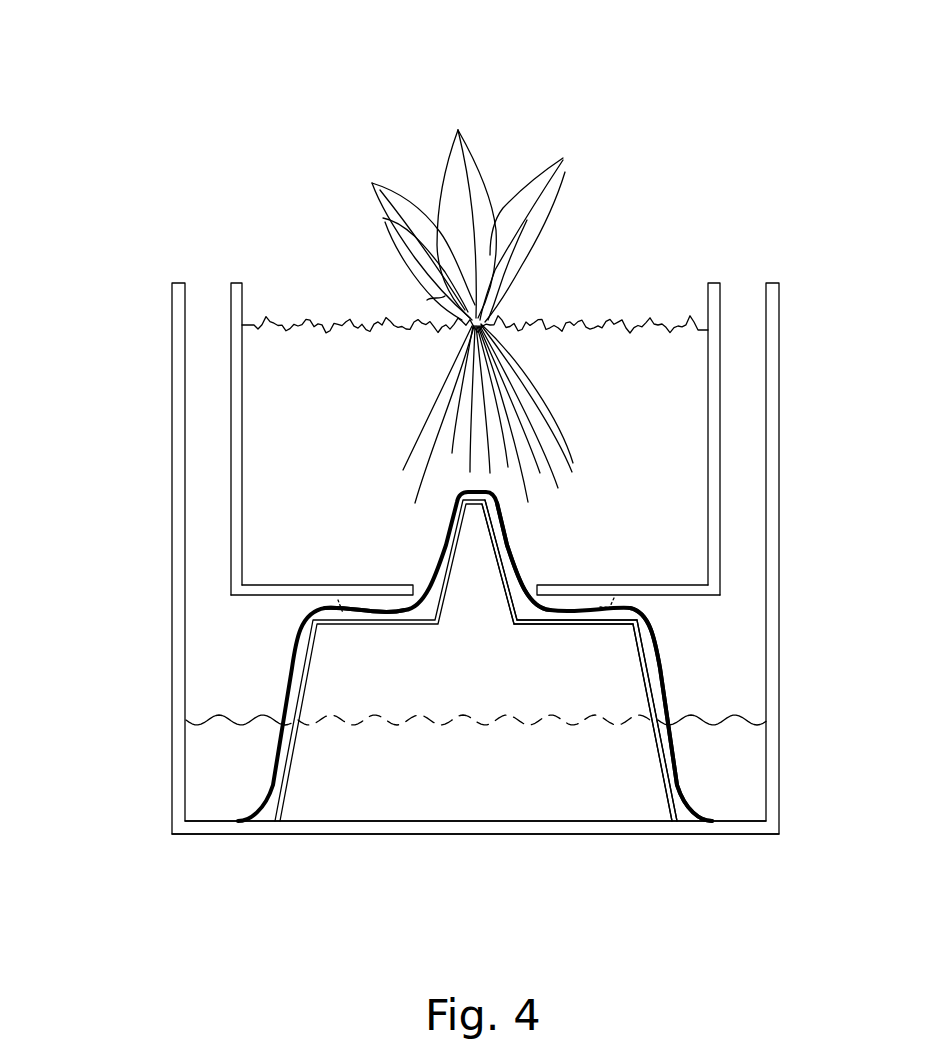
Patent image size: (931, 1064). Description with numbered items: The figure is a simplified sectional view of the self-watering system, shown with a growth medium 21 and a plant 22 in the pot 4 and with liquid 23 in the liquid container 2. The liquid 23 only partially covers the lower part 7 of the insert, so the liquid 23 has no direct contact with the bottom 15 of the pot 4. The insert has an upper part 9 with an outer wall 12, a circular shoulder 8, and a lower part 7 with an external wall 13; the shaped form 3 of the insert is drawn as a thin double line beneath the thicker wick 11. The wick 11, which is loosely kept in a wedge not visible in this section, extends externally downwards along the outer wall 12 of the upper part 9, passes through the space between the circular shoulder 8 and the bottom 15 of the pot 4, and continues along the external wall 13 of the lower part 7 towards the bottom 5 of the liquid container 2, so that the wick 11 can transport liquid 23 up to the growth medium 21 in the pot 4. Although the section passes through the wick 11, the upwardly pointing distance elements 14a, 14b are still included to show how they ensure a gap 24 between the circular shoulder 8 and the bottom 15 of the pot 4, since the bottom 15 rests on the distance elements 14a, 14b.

The liquid container 2 is at (178, 335).
The shaped form / insert 3 is at (305, 687).
The pot 4 is at (237, 303).
The bottom of the liquid container 5 is at (598, 828).
The lower part of the insert 7 is at (647, 654).
The circular shoulder 8 is at (537, 620).
The upper part of the insert 9 is at (504, 535).
The wick 11 is at (292, 654).
The outer wall of the upper part 12 is at (510, 571).
The external wall of the lower part 13 is at (657, 688).
The distance element 14a is at (339, 600).
The distance element 14b is at (615, 598).
The bottom of the pot 15 is at (277, 595).
The growth medium 21 is at (317, 318).
The plant 22 is at (452, 184).
The liquid 23 is at (403, 725).
The gap 24 is at (392, 602).